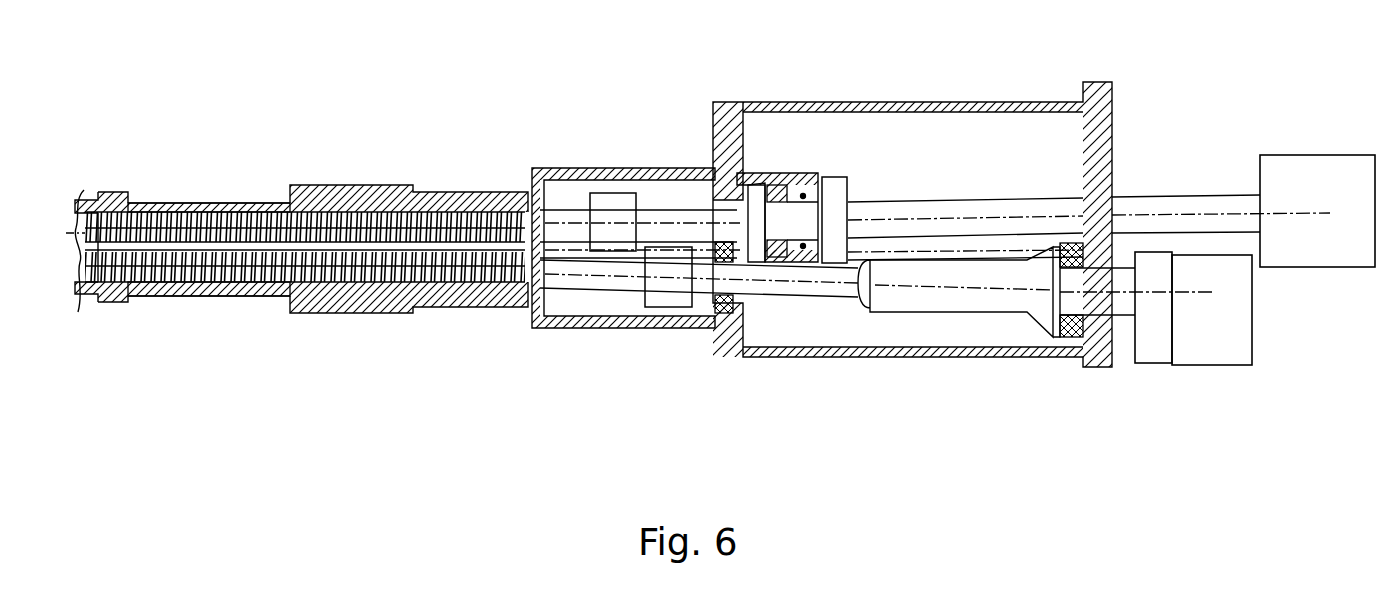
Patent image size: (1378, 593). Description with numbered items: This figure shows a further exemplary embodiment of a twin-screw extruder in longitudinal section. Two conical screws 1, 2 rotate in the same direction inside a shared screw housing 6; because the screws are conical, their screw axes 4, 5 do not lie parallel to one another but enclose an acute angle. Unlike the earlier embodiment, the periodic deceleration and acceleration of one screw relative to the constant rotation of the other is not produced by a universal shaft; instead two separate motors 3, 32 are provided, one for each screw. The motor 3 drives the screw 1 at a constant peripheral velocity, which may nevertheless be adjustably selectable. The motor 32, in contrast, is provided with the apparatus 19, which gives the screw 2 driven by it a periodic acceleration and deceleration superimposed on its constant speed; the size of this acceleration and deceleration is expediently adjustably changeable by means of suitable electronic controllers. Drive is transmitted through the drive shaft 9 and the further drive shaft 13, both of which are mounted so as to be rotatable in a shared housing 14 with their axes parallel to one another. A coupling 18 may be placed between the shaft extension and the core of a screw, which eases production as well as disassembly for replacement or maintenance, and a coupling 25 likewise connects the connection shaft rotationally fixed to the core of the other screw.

The screw 1 is at (431, 208).
The screw 2 is at (443, 277).
The motor 3 is at (1297, 190).
The axis 4 is at (695, 218).
The axis 5 is at (563, 273).
The screw housing 6 is at (352, 190).
The drive shaft 9 is at (907, 287).
The drive shaft 13 is at (913, 213).
The housing 14 is at (851, 350).
The coupling 18 is at (668, 287).
The apparatus 19 is at (1153, 347).
The coupling 25 is at (608, 213).
The motor 32 is at (1223, 338).